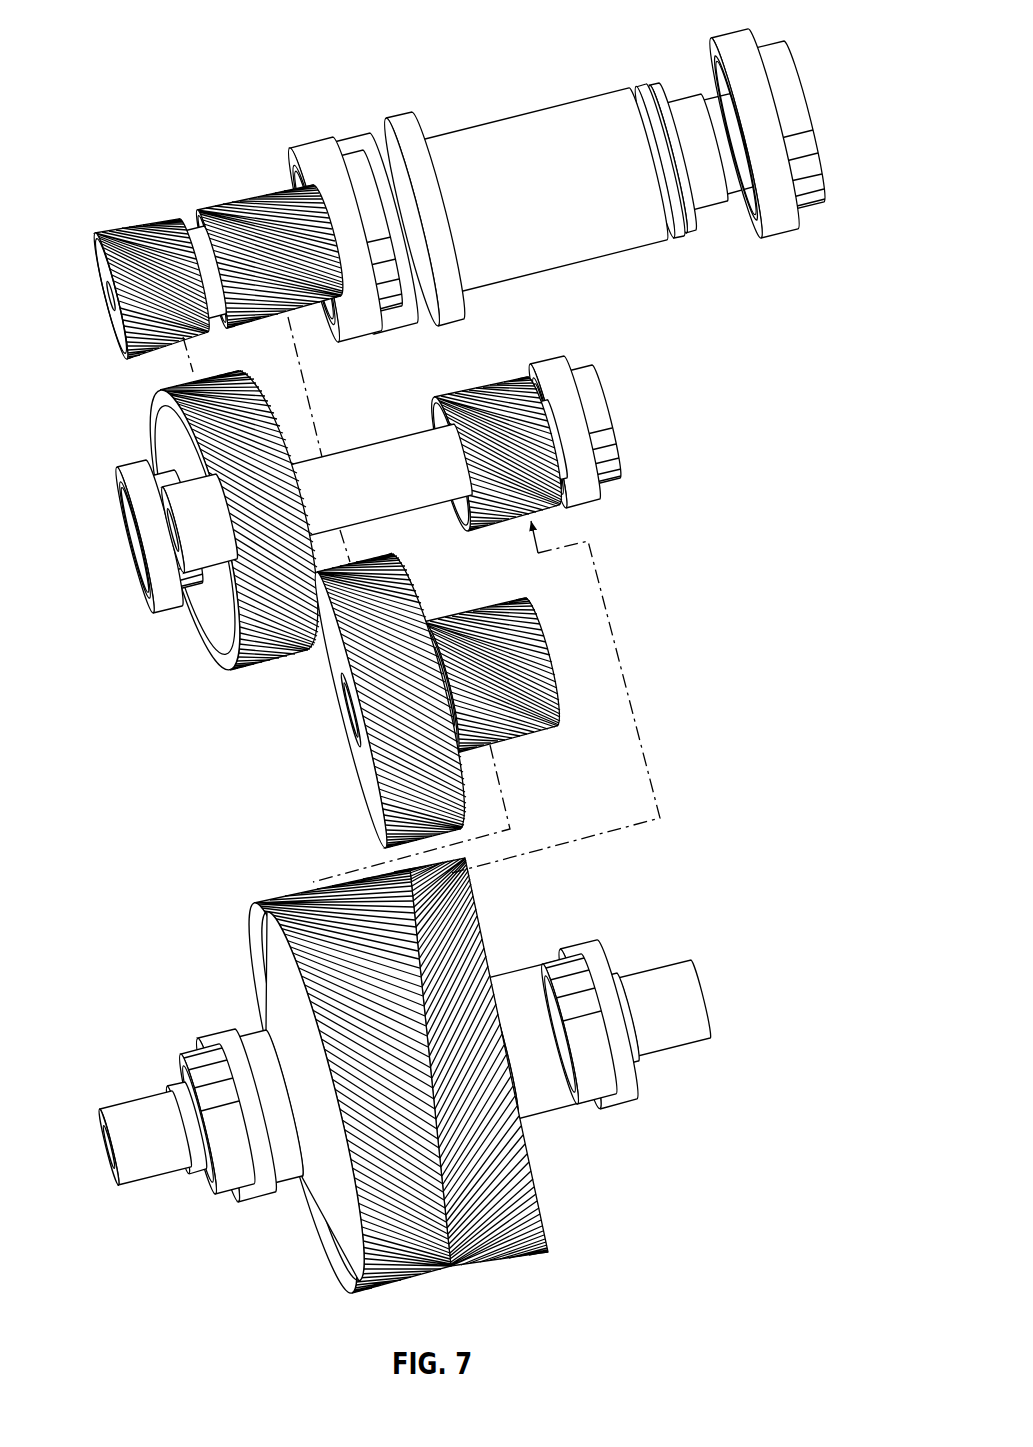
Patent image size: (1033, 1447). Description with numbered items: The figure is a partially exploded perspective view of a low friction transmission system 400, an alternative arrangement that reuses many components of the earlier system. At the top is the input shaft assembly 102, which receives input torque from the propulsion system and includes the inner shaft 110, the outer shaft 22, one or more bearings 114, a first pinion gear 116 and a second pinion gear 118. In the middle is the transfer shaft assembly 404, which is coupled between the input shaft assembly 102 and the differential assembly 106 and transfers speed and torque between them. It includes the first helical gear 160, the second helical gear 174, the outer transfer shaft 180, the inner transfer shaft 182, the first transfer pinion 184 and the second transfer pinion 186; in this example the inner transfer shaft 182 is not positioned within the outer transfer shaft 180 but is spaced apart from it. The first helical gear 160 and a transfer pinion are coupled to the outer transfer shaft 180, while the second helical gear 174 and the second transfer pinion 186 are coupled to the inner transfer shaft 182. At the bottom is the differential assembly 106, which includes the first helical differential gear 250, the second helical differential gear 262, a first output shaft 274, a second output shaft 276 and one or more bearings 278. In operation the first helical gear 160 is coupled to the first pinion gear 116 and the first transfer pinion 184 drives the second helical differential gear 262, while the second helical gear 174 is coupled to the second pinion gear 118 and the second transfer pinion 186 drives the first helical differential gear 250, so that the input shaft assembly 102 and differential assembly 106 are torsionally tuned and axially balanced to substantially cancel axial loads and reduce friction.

The outer shaft 22 is at (541, 105).
The input shaft assembly 102 is at (653, 72).
The differential assembly 106 is at (429, 1099).
The inner shaft 110 is at (590, 218).
The bearings 114 is at (393, 107).
The first pinion gear 116 is at (247, 190).
The second pinion gear 118 is at (147, 216).
The first helical gear 160 is at (366, 819).
The second helical gear 174 is at (237, 684).
The outer transfer shaft 180 is at (458, 767).
The inner transfer shaft 182 is at (374, 438).
The first transfer pinion 184 is at (527, 741).
The second transfer pinion 186 is at (522, 352).
The first helical differential gear 250 is at (409, 1099).
The second helical differential gear 262 is at (521, 1269).
The first output shaft 274 is at (130, 1193).
The second output shaft 276 is at (661, 1123).
The bearings 278 is at (594, 916).
The low friction transmission system 400 is at (487, 181).
The transfer shaft assembly 404 is at (460, 522).